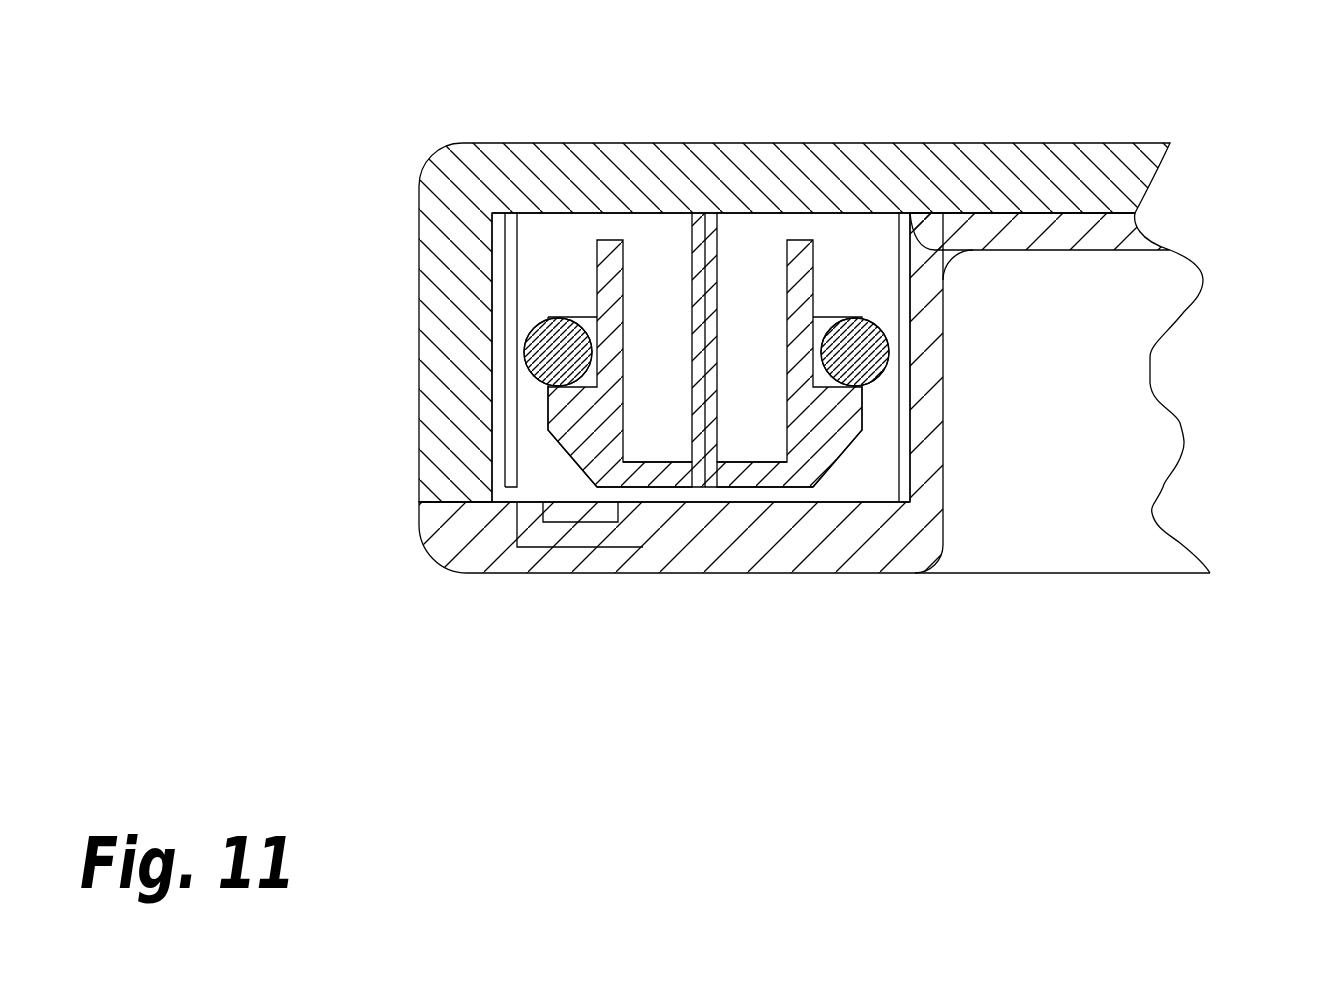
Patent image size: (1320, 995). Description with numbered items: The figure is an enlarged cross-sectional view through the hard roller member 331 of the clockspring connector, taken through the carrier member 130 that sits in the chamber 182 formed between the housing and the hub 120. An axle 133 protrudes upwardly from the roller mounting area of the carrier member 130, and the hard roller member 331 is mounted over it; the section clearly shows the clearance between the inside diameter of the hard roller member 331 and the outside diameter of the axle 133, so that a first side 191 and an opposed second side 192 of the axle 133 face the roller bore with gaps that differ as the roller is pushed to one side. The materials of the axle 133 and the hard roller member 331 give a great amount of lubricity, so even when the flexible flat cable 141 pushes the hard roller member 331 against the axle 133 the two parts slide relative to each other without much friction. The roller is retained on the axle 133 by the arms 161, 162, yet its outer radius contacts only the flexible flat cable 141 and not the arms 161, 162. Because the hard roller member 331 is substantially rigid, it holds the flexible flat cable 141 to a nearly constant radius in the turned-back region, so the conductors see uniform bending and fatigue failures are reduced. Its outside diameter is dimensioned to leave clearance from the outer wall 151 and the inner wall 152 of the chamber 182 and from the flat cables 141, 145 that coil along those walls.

The hub 120 is at (917, 543).
The carrier member 130 is at (692, 227).
The axle 133 is at (650, 472).
The flexible flat cable 141 is at (505, 240).
The flat ribbon cable 145 is at (902, 393).
The outer wall 151 is at (492, 293).
The inner wall 152 is at (900, 460).
The arm 161 is at (543, 418).
The arm 162 is at (863, 413).
The chamber 182 is at (870, 255).
The first side of the axle 191 is at (623, 288).
The second side of the axle 192 is at (597, 285).
The hard roller member 331 is at (527, 325).